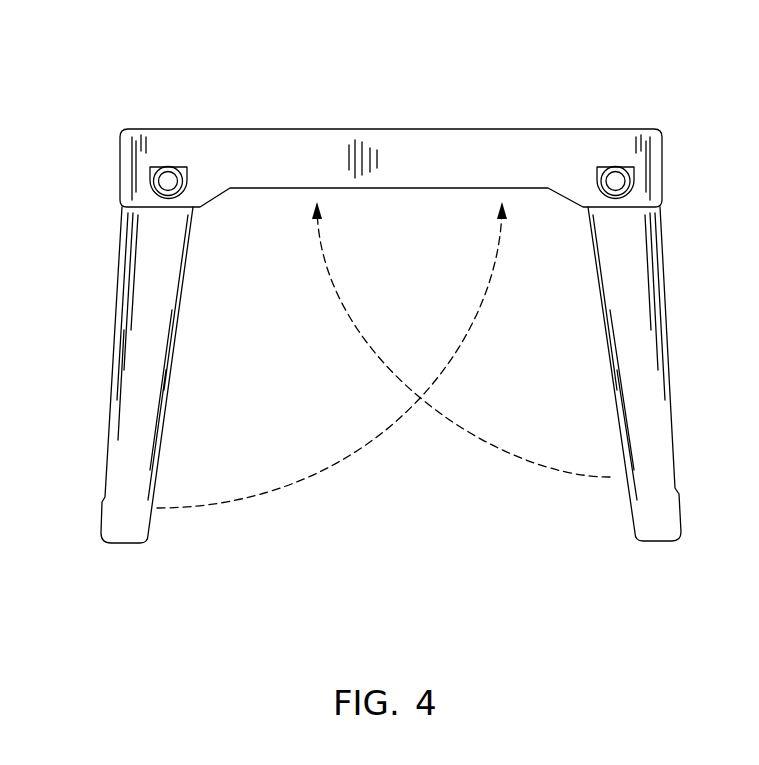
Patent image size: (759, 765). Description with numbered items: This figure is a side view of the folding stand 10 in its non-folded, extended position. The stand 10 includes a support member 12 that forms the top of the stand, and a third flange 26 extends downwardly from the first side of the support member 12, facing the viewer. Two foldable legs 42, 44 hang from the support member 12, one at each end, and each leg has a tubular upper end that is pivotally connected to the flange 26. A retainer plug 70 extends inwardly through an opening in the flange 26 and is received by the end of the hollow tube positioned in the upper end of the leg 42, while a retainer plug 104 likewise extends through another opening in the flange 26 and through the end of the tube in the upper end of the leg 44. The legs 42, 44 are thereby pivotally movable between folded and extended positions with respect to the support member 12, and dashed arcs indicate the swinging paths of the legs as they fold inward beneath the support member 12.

The folding stand 10 is at (392, 281).
The support member 12 is at (305, 136).
The third flange 26 is at (431, 168).
The leg 42 is at (106, 294).
The leg 44 is at (603, 365).
The retainer plug 70 is at (167, 180).
The retainer plug 104 is at (617, 180).